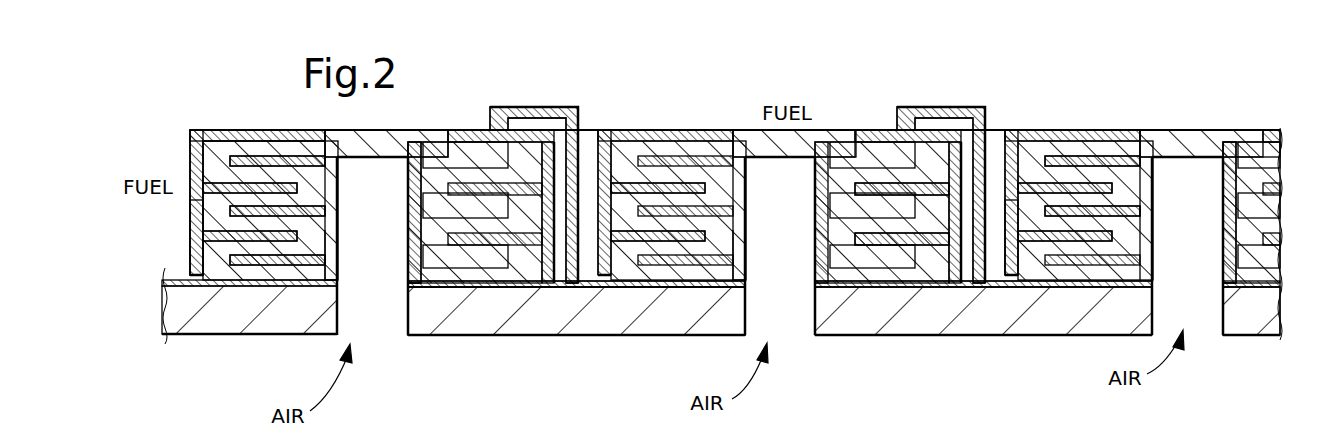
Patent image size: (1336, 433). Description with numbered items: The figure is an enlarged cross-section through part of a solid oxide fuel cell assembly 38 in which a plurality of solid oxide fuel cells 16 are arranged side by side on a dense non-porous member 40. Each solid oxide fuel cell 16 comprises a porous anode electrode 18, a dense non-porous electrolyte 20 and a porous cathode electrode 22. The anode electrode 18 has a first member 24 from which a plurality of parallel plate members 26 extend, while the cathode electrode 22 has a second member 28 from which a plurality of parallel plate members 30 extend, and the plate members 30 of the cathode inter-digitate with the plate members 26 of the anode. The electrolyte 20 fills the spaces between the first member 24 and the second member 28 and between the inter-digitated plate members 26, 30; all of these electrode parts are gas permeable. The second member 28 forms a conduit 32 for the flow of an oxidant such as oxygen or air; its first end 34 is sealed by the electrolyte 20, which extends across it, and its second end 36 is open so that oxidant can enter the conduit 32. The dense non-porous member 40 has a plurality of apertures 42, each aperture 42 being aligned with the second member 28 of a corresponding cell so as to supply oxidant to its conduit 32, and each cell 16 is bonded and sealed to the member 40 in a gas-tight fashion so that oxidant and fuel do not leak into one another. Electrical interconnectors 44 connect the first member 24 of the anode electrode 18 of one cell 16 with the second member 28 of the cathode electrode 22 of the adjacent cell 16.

The solid oxide fuel cell 16 is at (182, 80).
The porous anode electrode 18 is at (196, 142).
The dense non-porous electrolyte 20 is at (415, 130).
The porous cathode electrode 22 is at (407, 262).
The first member 24 is at (197, 252).
The parallel plate members 26 is at (280, 252).
The second member 28 is at (335, 262).
The parallel plate members 30 is at (288, 256).
The conduit 32 is at (348, 162).
The first end 34 is at (410, 175).
The second end 36 is at (418, 286).
The solid oxide fuel cell assembly 38 is at (543, 368).
The dense non-porous member 40 is at (560, 314).
The aperture 42 is at (372, 338).
The electrical interconnector 44 is at (536, 109).